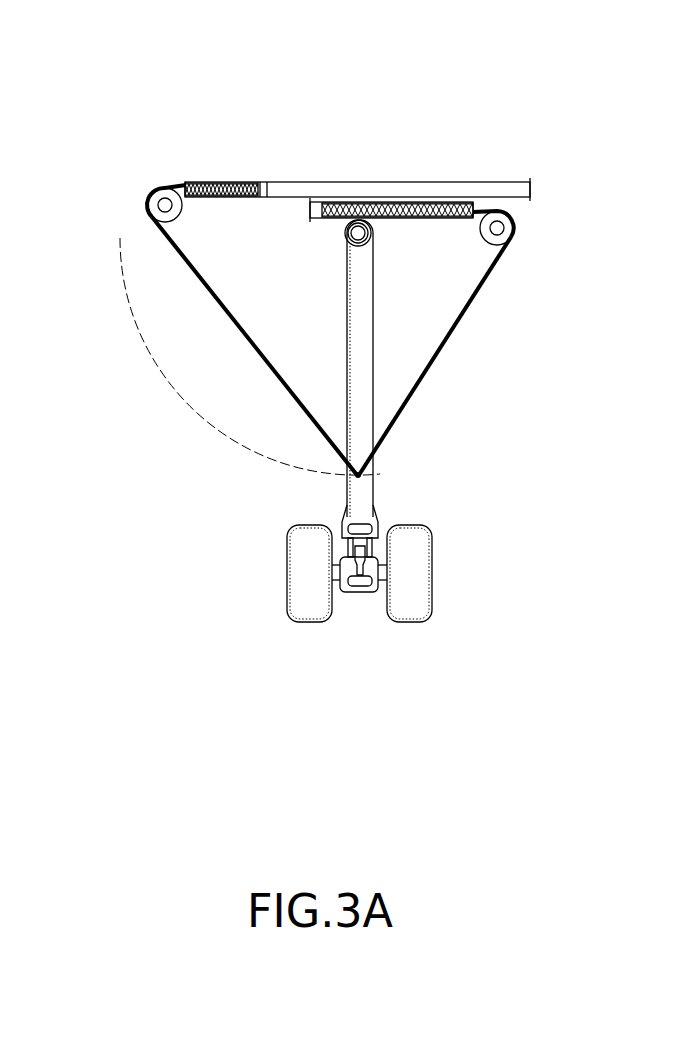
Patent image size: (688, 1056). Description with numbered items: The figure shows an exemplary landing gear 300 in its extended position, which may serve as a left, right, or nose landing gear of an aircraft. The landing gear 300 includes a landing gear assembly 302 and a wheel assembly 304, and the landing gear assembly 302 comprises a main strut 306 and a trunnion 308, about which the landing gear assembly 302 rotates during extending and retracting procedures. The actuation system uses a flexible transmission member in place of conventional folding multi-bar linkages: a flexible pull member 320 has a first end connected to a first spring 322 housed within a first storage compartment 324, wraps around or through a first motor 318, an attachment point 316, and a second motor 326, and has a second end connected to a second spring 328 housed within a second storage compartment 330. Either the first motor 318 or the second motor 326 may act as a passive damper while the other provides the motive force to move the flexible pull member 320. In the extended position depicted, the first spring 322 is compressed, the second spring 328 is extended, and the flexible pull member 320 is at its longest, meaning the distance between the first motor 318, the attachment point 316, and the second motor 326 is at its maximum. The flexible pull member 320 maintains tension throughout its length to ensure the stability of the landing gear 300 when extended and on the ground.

The landing gear 300 is at (80, 90).
The landing gear assembly 302 is at (460, 400).
The wheel assembly 304 is at (447, 572).
The main strut 306 is at (367, 493).
The trunnion 308 is at (373, 236).
The attachment point 316 is at (352, 478).
The first motor 318 is at (164, 205).
The flexible pull member 320 is at (222, 304).
The first spring 322 is at (233, 180).
The first storage compartment 324 is at (357, 147).
The second motor 326 is at (500, 229).
The second spring 328 is at (405, 164).
The second storage compartment 330 is at (340, 208).